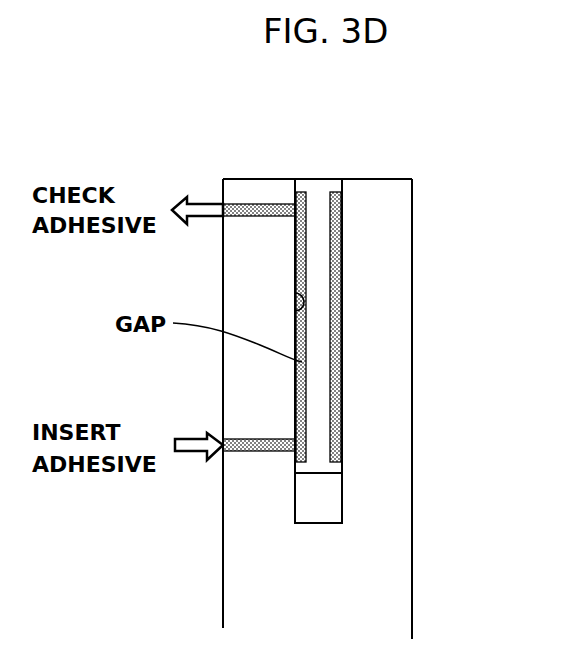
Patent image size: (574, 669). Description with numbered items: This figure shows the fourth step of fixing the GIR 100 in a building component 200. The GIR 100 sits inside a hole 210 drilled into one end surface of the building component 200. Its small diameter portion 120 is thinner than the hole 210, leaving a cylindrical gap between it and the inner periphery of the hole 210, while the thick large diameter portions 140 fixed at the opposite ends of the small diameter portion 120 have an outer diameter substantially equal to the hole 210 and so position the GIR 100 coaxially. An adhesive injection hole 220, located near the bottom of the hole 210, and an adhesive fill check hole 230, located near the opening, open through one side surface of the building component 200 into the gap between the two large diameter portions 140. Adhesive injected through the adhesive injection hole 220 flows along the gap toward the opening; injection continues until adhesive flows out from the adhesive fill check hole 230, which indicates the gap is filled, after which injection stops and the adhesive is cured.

The GIR 100 is at (342, 246).
The small diameter portion 120 is at (323, 321).
The large diameter portions 140 is at (334, 185).
The building component 200 is at (413, 365).
The hole 210 is at (295, 293).
The adhesive injection hole 220 is at (265, 439).
The adhesive fill check hole 230 is at (250, 204).